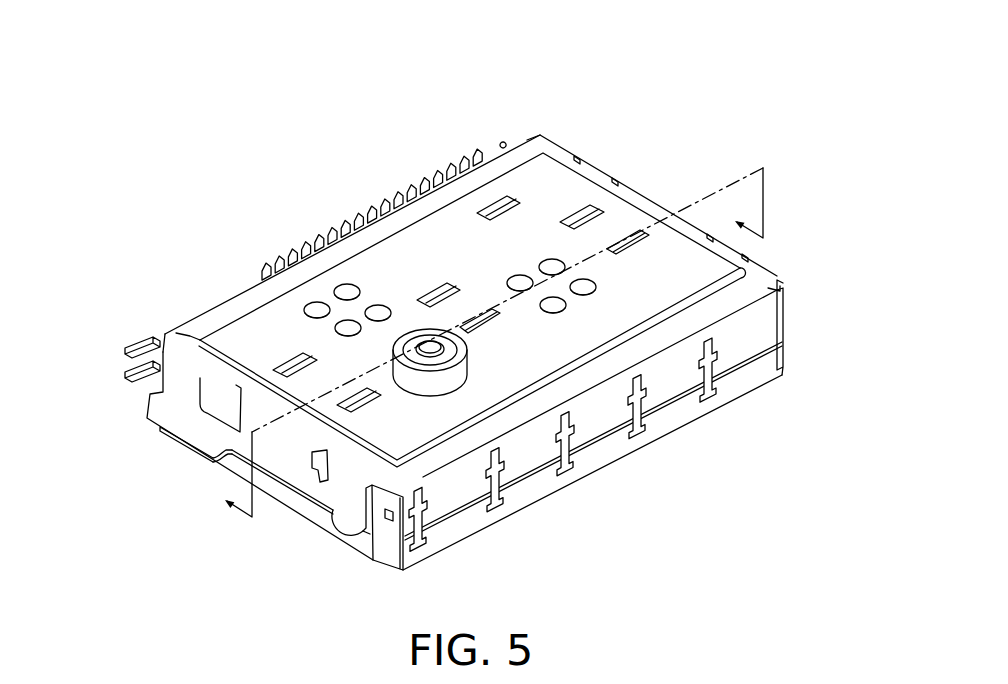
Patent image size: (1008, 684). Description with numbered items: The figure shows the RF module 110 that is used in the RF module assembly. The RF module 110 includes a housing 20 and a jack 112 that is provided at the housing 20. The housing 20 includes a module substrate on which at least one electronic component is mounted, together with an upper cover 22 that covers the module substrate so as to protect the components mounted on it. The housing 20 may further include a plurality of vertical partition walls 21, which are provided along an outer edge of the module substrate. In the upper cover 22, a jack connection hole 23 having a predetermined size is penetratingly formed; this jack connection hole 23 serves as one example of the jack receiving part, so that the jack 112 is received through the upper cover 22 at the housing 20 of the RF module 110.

The RF module 110 is at (683, 129).
The upper cover 22 is at (758, 273).
The vertical partition walls 21 is at (780, 327).
The jack connection hole 23 is at (470, 362).
The housing 20 is at (215, 431).
The jack 112 is at (410, 378).